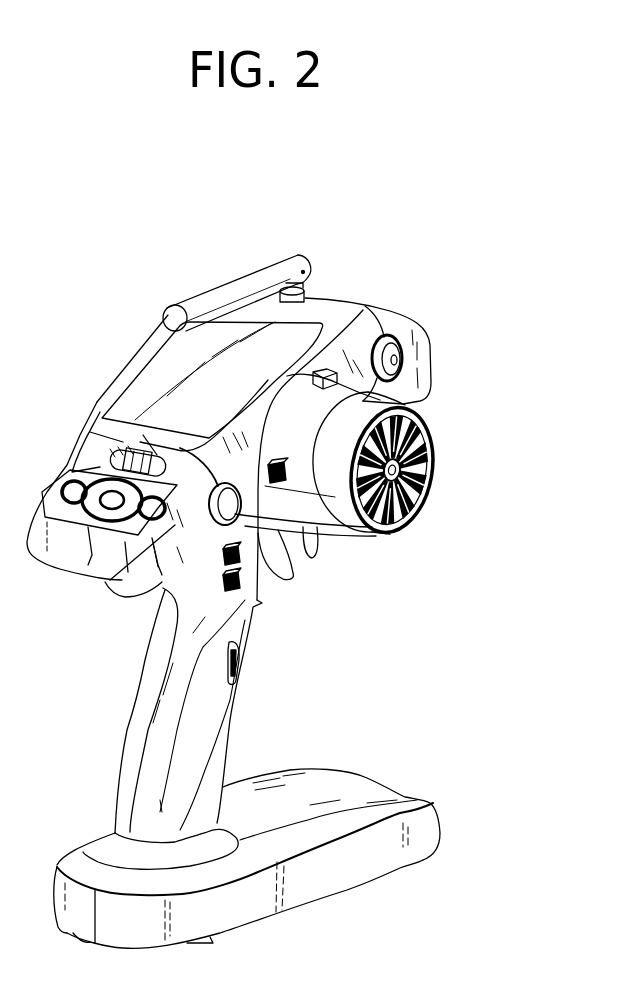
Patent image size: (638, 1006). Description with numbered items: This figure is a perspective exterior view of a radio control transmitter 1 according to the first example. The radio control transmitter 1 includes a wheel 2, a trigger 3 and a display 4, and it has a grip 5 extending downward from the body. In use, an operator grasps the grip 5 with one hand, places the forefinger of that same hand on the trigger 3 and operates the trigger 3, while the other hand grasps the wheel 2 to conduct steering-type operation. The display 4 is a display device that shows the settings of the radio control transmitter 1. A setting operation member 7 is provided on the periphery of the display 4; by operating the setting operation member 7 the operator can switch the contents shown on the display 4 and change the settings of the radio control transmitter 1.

The radio control transmitter 1 is at (125, 286).
The wheel 2 is at (440, 440).
The trigger 3 is at (288, 582).
The display 4 is at (157, 378).
The grip 5 is at (150, 686).
The setting operation member 7 is at (150, 519).